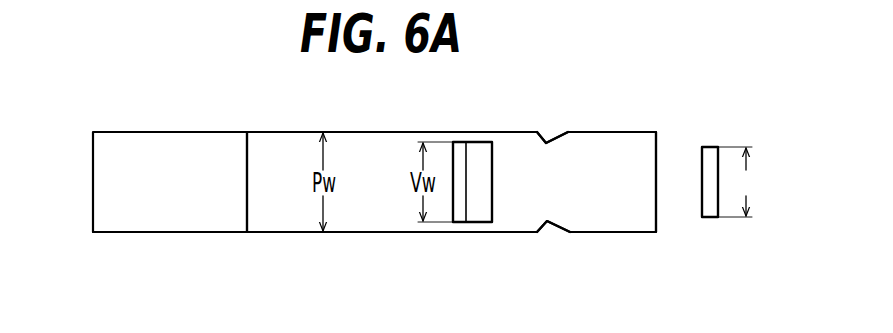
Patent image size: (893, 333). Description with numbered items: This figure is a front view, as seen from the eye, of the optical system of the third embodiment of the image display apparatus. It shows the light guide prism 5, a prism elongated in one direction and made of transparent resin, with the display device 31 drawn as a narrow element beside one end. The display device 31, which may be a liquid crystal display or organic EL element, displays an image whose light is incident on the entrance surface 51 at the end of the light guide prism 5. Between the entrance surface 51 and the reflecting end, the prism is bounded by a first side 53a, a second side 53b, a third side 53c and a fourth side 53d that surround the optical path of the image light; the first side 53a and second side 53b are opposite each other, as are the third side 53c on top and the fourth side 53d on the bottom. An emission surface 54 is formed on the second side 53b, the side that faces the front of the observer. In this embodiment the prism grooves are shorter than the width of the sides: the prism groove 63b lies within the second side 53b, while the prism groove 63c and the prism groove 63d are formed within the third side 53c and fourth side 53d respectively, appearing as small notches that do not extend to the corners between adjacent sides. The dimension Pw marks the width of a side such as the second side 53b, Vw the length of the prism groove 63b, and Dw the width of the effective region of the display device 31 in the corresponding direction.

The light guide prism 5 is at (584, 116).
The emission surface 54 is at (123, 187).
The second side 53b is at (268, 150).
The first side 53a is at (296, 148).
The third side 53c is at (375, 132).
The fourth side 53d is at (382, 233).
The prism groove 63b is at (475, 158).
The prism groove 63c is at (546, 131).
The prism groove 63d is at (547, 232).
The entrance surface 51 is at (657, 160).
The display device 31 is at (708, 147).